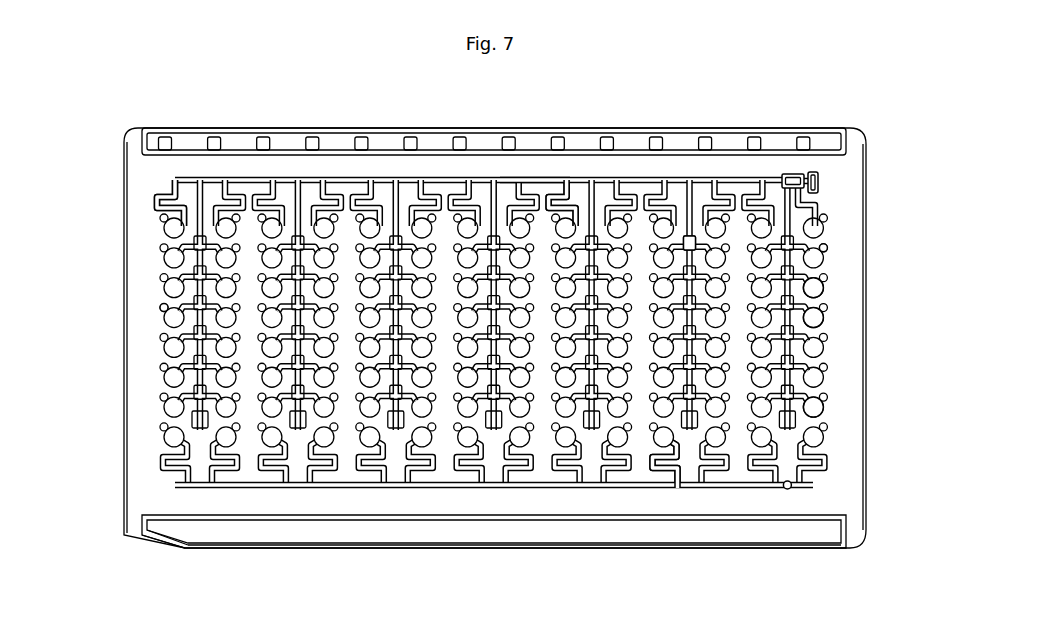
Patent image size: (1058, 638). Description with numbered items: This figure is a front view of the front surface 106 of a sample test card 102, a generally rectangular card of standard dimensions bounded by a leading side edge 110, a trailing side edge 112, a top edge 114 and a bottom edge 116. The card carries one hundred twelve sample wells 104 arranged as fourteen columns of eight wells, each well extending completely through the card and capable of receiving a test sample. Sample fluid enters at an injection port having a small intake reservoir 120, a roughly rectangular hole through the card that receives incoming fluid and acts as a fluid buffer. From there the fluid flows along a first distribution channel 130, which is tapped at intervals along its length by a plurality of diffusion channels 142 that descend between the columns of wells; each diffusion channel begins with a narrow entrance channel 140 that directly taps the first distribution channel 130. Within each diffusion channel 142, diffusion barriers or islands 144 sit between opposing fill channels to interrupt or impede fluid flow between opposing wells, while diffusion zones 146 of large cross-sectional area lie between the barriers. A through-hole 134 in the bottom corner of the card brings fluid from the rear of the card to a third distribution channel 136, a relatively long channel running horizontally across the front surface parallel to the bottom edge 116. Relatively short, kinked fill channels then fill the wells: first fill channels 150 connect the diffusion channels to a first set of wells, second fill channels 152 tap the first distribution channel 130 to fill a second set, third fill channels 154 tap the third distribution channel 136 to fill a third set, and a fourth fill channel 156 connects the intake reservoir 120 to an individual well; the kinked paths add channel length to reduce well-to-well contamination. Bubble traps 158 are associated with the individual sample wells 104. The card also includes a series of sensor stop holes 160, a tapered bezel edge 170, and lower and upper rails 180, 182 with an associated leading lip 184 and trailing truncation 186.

The sample test card 102 is at (900, 131).
The sample well 104 is at (823, 407).
The front surface 106 is at (437, 174).
The leading side edge 110 is at (124, 390).
The trailing side edge 112 is at (866, 380).
The top edge 114 is at (345, 160).
The bottom edge 116 is at (270, 548).
The intake reservoir 120 is at (818, 182).
The first distribution channel 130 is at (538, 182).
The through-hole 134 is at (787, 489).
The third distribution channel 136 is at (520, 488).
The narrow entrance channel 140 is at (578, 187).
The diffusion channel 142 is at (693, 236).
The diffusion barrier 144 is at (823, 284).
The diffusion zone 146 is at (823, 317).
The first fill channel 150 is at (827, 245).
The second fill channel 152 is at (160, 197).
The third fill channel 154 is at (670, 468).
The fourth fill channel 156 is at (818, 207).
The bubble trap 158 is at (160, 308).
The sensor stop hole 160 is at (754, 137).
The tapered bezel edge 170 is at (134, 541).
The lower rail 180 is at (382, 540).
The upper rail 182 is at (250, 147).
The leading lip 184 is at (143, 137).
The trailing truncation 186 is at (142, 520).